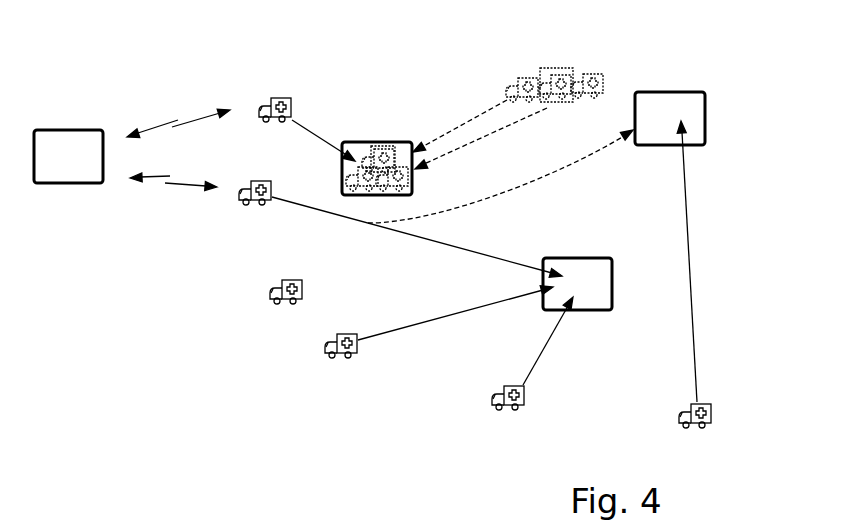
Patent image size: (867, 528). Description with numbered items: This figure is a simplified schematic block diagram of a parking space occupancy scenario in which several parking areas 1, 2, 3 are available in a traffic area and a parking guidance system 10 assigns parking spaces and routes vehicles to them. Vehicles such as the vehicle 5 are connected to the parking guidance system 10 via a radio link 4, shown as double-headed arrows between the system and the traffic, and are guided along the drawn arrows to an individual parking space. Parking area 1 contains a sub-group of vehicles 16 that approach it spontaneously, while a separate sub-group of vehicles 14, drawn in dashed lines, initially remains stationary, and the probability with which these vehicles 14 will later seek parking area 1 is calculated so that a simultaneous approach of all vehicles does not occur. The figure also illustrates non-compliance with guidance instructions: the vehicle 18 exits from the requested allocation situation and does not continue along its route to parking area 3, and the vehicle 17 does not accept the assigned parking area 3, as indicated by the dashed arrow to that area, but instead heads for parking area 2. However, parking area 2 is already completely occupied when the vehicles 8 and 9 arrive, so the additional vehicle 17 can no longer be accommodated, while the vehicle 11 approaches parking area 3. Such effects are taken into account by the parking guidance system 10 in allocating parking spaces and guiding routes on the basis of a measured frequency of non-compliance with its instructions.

The parking guidance system 10 is at (80, 130).
The radio link 4 is at (195, 118).
The vehicle 5 is at (283, 97).
The parking area 1 is at (378, 144).
The sub-group of vehicles 16 is at (391, 146).
The sub-group of vehicles 14 is at (578, 75).
The parking area 3 is at (668, 92).
The vehicle 17 is at (248, 208).
The vehicle 18 is at (287, 303).
The vehicle 8 is at (340, 358).
The parking area 2 is at (597, 312).
The vehicle 9 is at (507, 413).
The vehicle 11 is at (694, 433).